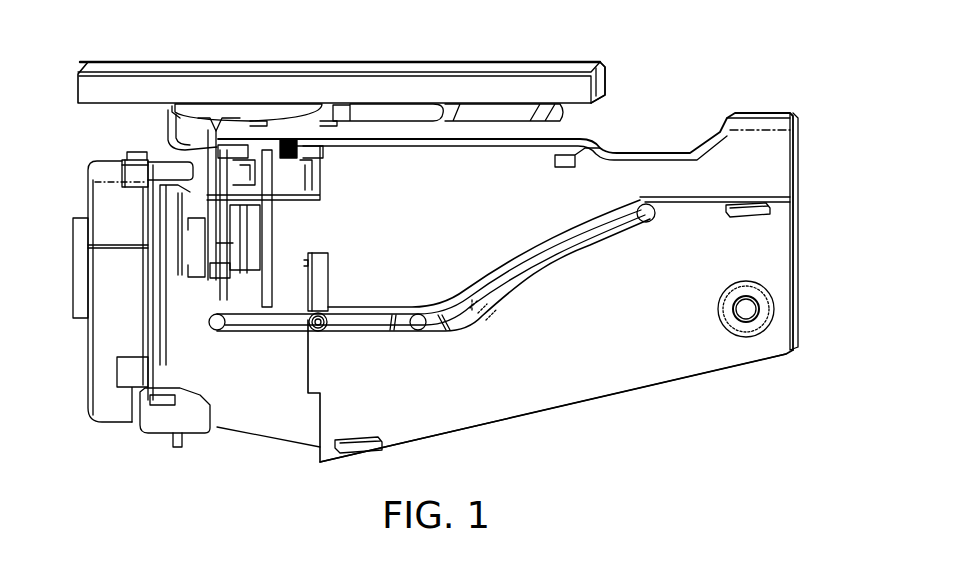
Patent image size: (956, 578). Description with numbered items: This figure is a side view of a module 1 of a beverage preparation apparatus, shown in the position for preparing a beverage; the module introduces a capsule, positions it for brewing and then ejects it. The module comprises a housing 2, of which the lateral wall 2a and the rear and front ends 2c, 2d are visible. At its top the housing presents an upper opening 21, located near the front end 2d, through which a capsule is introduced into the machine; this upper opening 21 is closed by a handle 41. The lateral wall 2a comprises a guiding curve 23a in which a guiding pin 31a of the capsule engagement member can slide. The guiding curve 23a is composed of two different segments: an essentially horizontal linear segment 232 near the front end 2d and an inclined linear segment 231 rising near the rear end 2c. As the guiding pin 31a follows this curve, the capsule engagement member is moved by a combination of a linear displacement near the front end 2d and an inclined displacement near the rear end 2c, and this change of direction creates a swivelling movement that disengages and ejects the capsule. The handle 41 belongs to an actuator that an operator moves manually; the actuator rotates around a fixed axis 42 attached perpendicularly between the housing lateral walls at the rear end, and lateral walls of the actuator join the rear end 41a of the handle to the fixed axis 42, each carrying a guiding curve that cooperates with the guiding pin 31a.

The module 1 is at (684, 78).
The housing 2 is at (782, 232).
The lateral wall 2a is at (628, 382).
The rear end 2c is at (798, 265).
The front end 2d is at (157, 323).
The upper opening 21 is at (258, 104).
The guiding curve 23a is at (508, 281).
The inclined linear segment 231 is at (607, 223).
The essentially horizontal linear segment 232 is at (303, 322).
The lateral guiding pin 31a is at (417, 331).
The handle 41 is at (357, 68).
The rear end of the actuator handle 41a is at (603, 84).
The fixed axis 42 is at (760, 307).